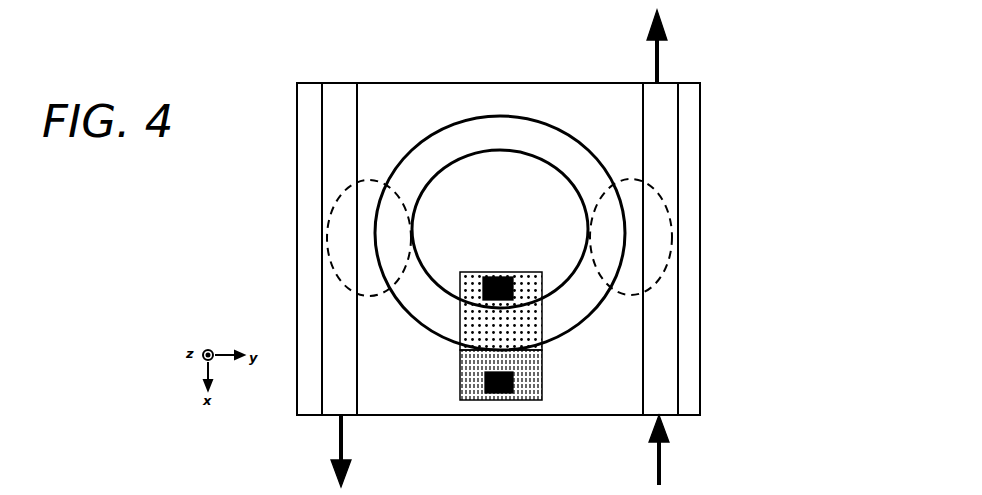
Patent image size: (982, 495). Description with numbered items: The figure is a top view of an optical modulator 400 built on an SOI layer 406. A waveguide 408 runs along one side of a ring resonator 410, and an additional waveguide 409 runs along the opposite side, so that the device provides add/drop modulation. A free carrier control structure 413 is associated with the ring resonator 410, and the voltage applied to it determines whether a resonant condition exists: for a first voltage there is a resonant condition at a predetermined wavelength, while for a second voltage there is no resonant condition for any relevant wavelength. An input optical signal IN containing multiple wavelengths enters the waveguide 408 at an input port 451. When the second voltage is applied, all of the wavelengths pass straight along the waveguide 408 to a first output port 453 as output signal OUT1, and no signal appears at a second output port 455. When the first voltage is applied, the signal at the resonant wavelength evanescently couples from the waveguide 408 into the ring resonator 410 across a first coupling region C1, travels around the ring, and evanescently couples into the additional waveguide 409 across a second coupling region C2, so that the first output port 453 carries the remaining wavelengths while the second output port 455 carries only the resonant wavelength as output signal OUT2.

The optical modulator 400 is at (157, 190).
The SOI layer 406 is at (403, 100).
The waveguide 408 is at (672, 126).
The additional waveguide 409 is at (325, 145).
The ring resonator 410 is at (507, 116).
The free carrier control structure 413 is at (547, 263).
The input port 451 is at (666, 416).
The first output port 453 is at (667, 83).
The second output port 455 is at (314, 416).
The first coupling region C1 is at (673, 241).
The second coupling region C2 is at (329, 262).